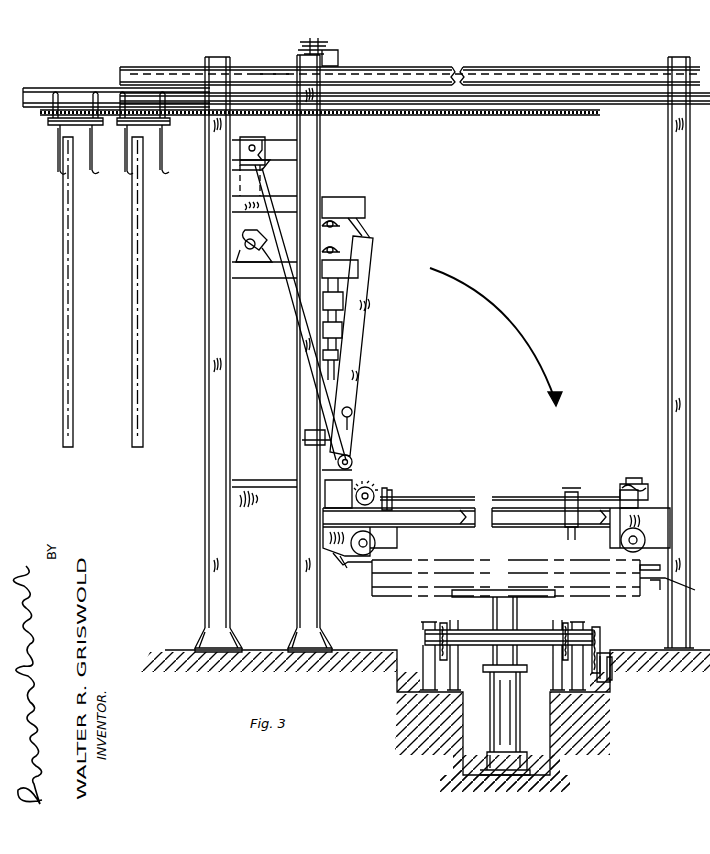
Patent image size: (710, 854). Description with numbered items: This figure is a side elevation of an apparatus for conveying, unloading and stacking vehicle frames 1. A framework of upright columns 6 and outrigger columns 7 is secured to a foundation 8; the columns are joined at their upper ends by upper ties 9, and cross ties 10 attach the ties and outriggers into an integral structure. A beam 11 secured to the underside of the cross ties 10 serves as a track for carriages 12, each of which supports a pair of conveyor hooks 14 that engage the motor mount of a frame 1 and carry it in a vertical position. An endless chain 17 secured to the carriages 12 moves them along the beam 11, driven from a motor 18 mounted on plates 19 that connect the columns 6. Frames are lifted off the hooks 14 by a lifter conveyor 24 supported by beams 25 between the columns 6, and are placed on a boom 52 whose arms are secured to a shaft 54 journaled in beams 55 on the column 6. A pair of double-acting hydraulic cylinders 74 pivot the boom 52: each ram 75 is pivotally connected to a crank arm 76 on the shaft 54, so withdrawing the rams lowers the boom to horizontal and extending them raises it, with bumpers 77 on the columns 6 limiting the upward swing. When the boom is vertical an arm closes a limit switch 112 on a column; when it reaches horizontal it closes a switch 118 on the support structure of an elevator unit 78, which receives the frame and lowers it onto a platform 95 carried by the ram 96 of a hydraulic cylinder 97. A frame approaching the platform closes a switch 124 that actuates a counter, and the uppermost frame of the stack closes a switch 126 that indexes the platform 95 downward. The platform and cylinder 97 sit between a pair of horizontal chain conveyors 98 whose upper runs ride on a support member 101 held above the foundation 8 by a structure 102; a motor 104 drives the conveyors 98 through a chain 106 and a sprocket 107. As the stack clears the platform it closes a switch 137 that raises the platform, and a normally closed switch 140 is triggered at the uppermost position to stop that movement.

The vehicle frame 1 is at (78, 304).
The upright columns 6 is at (208, 352).
The outrigger columns 7 is at (670, 322).
The foundation 8 is at (362, 648).
The upper ties 9 is at (170, 70).
The cross ties 10 is at (196, 72).
The beam 11 is at (650, 100).
The carriages 12 is at (48, 122).
The conveyor hooks 14 is at (58, 153).
The endless chain 17 is at (398, 112).
The motor 18 is at (330, 66).
The plates 19 is at (270, 73).
The lifter conveyor 24 is at (356, 240).
The beams 25 is at (285, 210).
The boom 52 is at (362, 392).
The shaft 54 is at (352, 463).
The beams 55 is at (268, 480).
The hydraulic cylinders 74 is at (304, 398).
The ram 75 is at (305, 446).
The crank arm 76 is at (324, 480).
The bumpers 77 is at (360, 348).
The elevator unit 78 is at (463, 496).
The platform 95 is at (554, 596).
The ram 96 is at (516, 622).
The hydraulic cylinder 97 is at (520, 730).
The chain conveyors 98 is at (448, 628).
The support member 101 is at (436, 628).
The structure 102 is at (478, 646).
The motor 104 is at (614, 676).
The chain 106 is at (598, 650).
The sprocket 107 is at (600, 628).
The limit switch 112 is at (356, 374).
The switch 118 is at (466, 526).
The switch 124 is at (566, 538).
The switch 126 is at (365, 562).
The switch 137 is at (640, 586).
The switch 140 is at (582, 526).